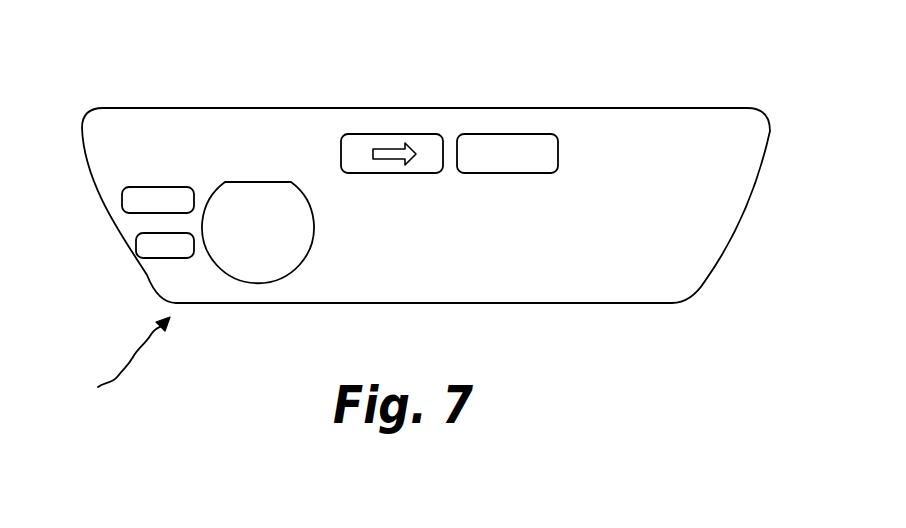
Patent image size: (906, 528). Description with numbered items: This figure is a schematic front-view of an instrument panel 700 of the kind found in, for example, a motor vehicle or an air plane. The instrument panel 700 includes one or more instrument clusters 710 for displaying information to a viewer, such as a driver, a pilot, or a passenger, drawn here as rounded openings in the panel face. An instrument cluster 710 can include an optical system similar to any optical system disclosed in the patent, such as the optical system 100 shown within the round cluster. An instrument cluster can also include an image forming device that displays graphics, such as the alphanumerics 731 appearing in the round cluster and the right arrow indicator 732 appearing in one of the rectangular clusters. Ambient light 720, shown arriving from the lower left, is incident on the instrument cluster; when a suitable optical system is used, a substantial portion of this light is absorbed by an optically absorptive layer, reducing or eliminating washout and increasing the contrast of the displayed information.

The instrument panel 700 is at (647, 80).
The instrument cluster 710 is at (220, 187).
The optical system 100 is at (258, 232).
The alphanumerics 731 is at (260, 182).
The right arrow indicator 732 is at (390, 156).
The ambient light 720 is at (131, 360).